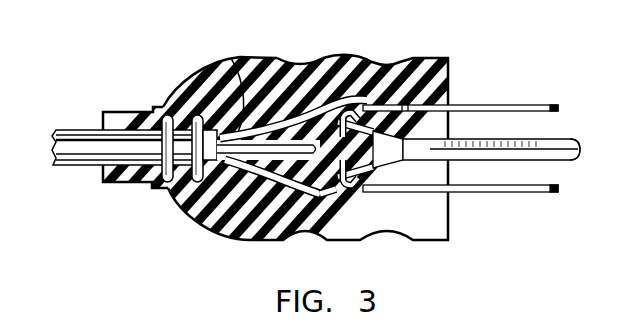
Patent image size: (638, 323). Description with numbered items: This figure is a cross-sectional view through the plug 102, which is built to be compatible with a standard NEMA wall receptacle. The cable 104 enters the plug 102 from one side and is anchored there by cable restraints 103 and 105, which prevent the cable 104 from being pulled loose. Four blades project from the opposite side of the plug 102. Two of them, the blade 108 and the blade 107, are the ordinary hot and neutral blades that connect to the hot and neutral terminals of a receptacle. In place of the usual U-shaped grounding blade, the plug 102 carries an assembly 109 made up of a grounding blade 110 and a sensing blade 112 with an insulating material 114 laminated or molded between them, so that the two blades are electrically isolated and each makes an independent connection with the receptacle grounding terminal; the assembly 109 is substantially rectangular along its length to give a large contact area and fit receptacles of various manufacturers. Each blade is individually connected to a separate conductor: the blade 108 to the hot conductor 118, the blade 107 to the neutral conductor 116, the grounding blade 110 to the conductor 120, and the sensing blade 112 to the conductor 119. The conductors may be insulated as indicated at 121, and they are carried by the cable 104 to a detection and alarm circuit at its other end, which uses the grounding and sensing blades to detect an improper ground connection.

The plug 102 is at (247, 140).
The cable restraint 103 is at (152, 110).
The cable 104 is at (80, 166).
The cable restraint 105 is at (182, 114).
The blade 107 is at (502, 194).
The blade 108 is at (478, 104).
The assembly 109 is at (534, 138).
The grounding blade 110 is at (496, 153).
The sensing blade 112 is at (554, 161).
The insulating material 114 is at (582, 153).
The neutral conductor 116 is at (341, 203).
The hot conductor 118 is at (386, 66).
The conductor 119 is at (303, 200).
The conductor 120 is at (334, 65).
The insulation 121 is at (230, 57).